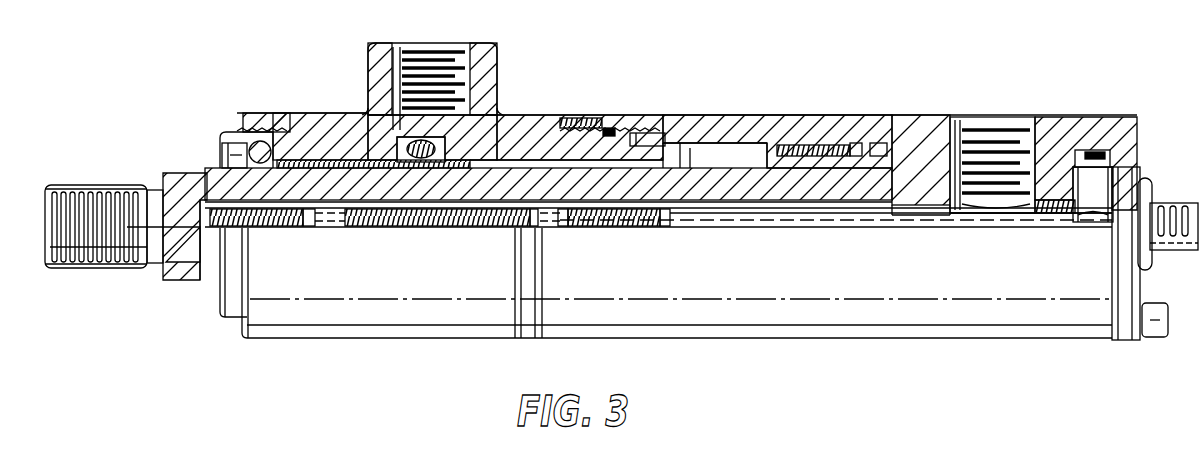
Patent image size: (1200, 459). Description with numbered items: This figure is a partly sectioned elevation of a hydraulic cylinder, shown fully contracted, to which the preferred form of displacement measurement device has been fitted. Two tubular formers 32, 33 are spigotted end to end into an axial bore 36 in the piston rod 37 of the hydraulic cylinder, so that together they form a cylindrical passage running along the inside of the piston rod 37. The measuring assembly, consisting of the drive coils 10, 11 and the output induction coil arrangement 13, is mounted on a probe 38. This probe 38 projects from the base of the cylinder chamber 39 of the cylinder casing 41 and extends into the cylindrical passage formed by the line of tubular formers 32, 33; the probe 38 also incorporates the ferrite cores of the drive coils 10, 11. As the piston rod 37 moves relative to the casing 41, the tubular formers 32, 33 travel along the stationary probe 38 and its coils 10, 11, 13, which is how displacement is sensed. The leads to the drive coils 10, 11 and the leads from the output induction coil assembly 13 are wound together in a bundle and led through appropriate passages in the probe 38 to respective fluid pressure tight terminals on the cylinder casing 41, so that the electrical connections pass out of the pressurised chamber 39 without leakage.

The piston rod 37 is at (187, 182).
The axial bore 36 is at (268, 198).
The tubular former 32 is at (322, 203).
The tubular former 33 is at (695, 200).
The drive coil 10 is at (280, 216).
The output induction coil arrangement 13 is at (457, 217).
The drive coil 11 is at (635, 215).
The probe 38 is at (807, 220).
The cylinder chamber 39 is at (933, 210).
The cylinder casing 41 is at (763, 315).